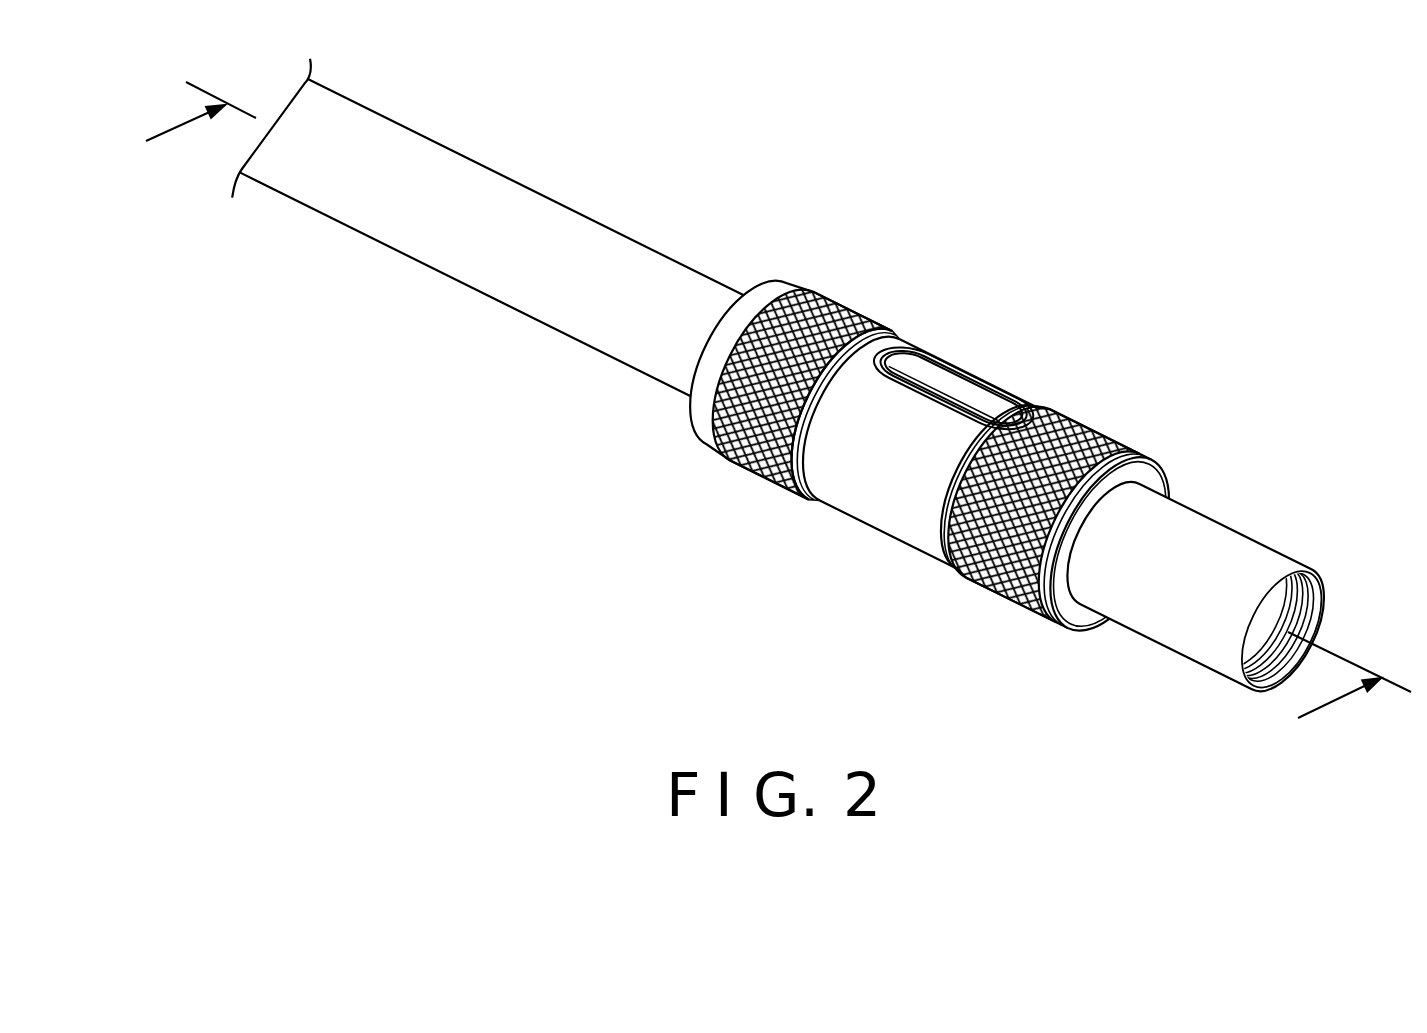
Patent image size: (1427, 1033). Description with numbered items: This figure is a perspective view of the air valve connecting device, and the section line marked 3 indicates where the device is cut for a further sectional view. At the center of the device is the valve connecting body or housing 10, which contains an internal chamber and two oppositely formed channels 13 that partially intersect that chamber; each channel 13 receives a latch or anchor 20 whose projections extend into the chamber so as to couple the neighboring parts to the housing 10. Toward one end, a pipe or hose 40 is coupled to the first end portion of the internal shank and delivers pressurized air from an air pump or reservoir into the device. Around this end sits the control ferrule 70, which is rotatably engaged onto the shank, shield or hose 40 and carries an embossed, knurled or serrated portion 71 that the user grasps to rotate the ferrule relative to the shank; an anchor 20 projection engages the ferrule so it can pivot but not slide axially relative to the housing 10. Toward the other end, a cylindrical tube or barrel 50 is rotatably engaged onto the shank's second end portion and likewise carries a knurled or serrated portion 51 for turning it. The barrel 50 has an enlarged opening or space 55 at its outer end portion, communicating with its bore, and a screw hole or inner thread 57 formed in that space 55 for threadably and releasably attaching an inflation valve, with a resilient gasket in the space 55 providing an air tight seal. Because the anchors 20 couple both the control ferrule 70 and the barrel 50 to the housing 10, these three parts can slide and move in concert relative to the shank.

The section line 3- 3 is at (769, 423).
The valve connecting body or housing 10 is at (877, 510).
The channels 13 is at (980, 381).
The latch or anchor 20 is at (925, 365).
The pipe or hose 40 is at (443, 171).
The cylindrical tube or barrel 50 is at (1190, 544).
The knurled or serrated portion 51 is at (1076, 419).
The enlarged opening or space 55 is at (1251, 648).
The screw hole or inner thread 57 is at (1281, 590).
The barrel or control ferrule 70 is at (744, 294).
The knurled or serrated portion 71 is at (828, 294).